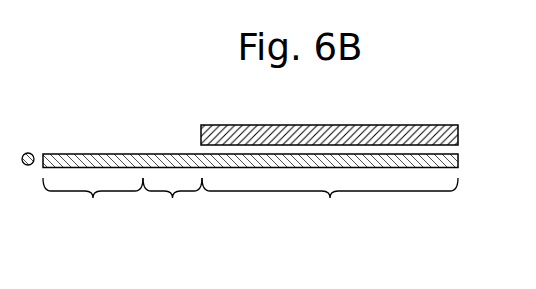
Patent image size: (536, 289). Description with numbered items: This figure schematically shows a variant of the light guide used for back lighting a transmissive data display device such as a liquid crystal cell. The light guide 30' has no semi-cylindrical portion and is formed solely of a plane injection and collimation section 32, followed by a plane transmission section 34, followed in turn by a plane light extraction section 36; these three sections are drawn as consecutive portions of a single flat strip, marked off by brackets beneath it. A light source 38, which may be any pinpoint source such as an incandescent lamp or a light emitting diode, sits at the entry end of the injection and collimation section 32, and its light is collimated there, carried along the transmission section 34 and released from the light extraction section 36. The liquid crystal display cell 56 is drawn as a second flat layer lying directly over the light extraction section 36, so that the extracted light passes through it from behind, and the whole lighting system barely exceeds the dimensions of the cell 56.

The light guide 30' is at (250, 210).
The liquid crystal display cell 56 is at (432, 133).
The light source 38 is at (27, 165).
The injection and collimation section 32 is at (93, 202).
The transmission section 34 is at (172, 202).
The light extraction section 36 is at (330, 202).